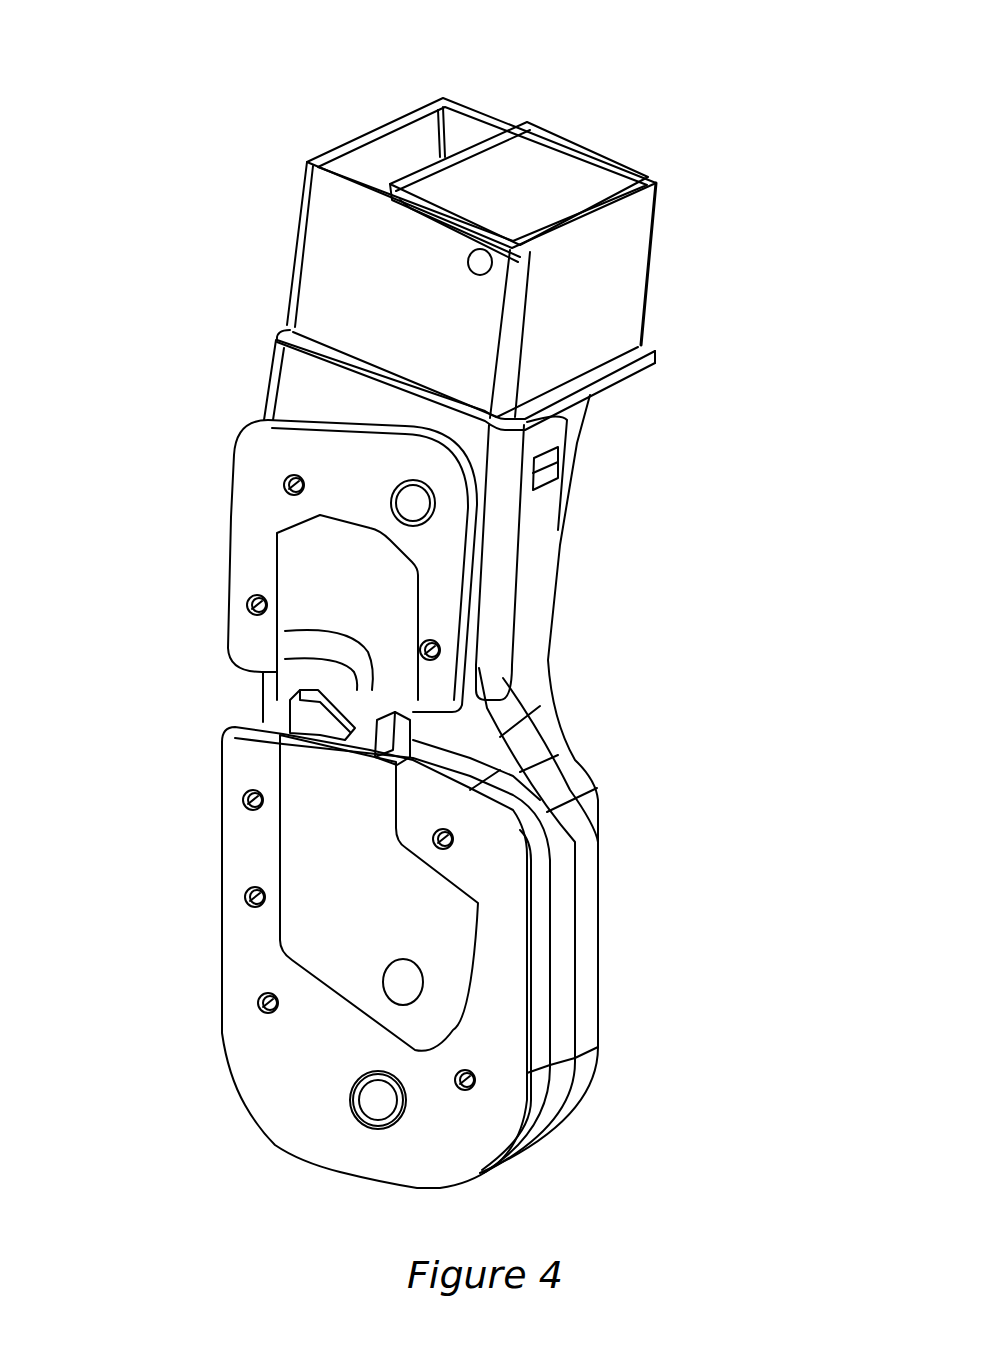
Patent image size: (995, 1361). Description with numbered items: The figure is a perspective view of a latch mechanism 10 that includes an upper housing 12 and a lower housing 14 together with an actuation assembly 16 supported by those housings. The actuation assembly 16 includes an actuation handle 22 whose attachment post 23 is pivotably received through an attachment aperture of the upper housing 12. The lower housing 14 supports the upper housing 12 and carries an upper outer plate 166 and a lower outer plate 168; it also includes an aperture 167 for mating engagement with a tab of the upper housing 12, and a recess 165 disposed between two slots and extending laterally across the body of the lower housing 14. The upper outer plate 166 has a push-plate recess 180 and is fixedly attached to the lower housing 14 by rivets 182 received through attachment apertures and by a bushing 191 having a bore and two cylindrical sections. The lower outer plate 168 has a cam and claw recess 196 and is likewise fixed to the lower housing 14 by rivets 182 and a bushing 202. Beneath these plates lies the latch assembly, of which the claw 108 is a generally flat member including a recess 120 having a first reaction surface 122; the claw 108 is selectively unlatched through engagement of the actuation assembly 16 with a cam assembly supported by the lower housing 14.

The latch mechanism 10 is at (176, 45).
The upper housing 12 is at (622, 276).
The lower housing 14 is at (535, 597).
The actuation assembly 16 is at (532, 160).
The actuation handle 22 is at (568, 155).
The attachment post 23 is at (478, 252).
The claw 108 is at (414, 737).
The recess 120 is at (360, 627).
The first reaction surface 122 is at (320, 658).
The recess 165 is at (500, 752).
The upper outer plate 166 is at (455, 538).
The aperture 167 is at (560, 460).
The lower outer plate 168 is at (508, 987).
The push-plate recess 180 is at (300, 583).
The rivets 182 is at (284, 480).
The bushing 191 is at (410, 493).
The cam and claw recess 196 is at (292, 853).
The bushing 202 is at (380, 1107).